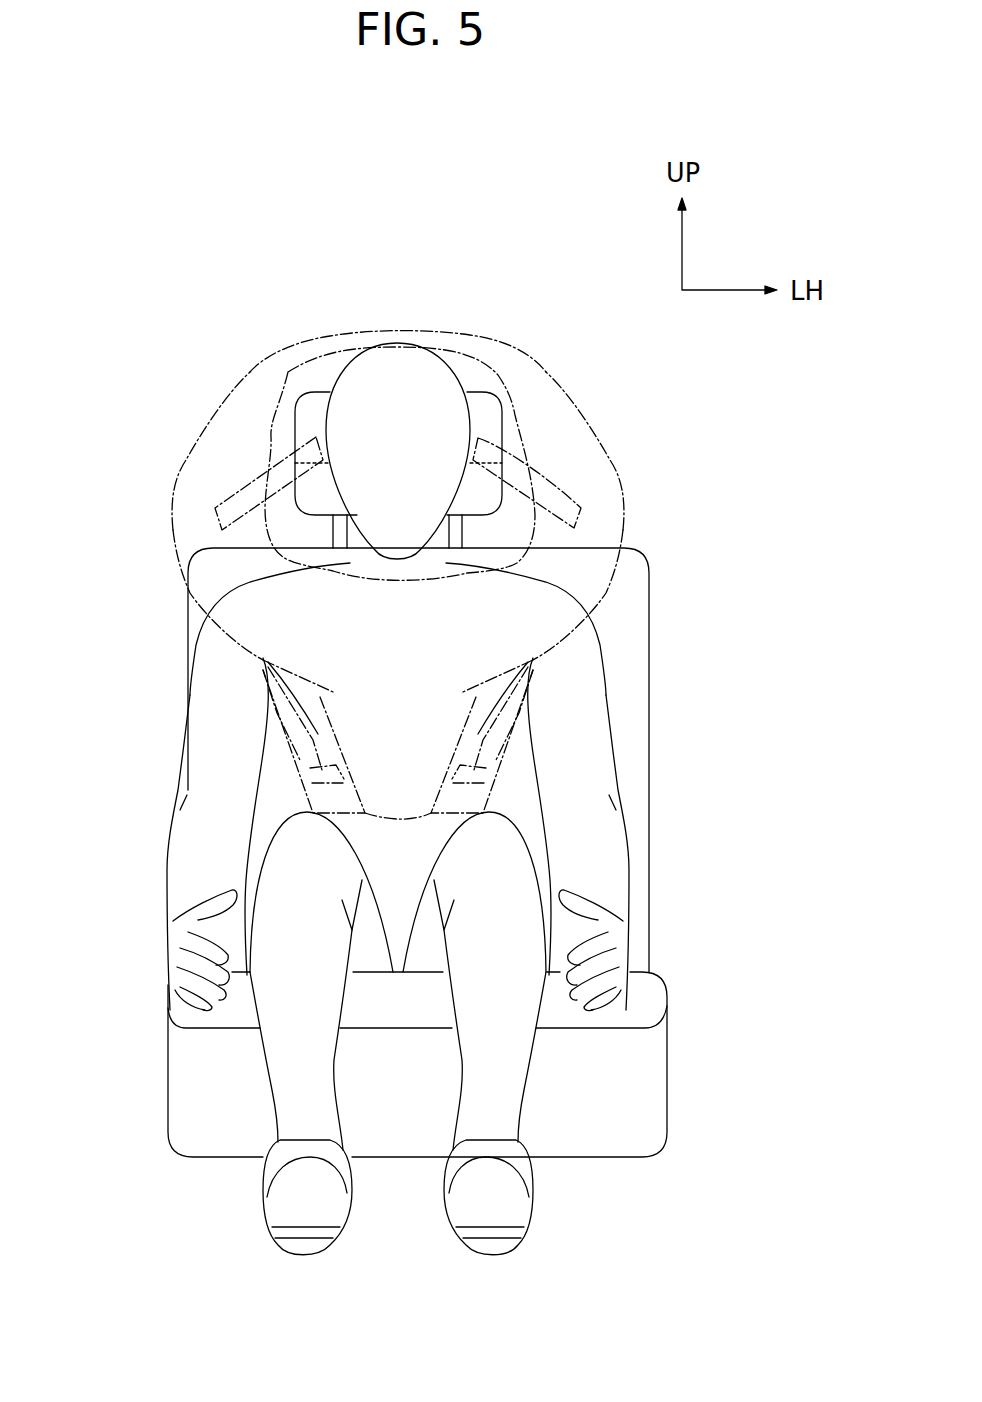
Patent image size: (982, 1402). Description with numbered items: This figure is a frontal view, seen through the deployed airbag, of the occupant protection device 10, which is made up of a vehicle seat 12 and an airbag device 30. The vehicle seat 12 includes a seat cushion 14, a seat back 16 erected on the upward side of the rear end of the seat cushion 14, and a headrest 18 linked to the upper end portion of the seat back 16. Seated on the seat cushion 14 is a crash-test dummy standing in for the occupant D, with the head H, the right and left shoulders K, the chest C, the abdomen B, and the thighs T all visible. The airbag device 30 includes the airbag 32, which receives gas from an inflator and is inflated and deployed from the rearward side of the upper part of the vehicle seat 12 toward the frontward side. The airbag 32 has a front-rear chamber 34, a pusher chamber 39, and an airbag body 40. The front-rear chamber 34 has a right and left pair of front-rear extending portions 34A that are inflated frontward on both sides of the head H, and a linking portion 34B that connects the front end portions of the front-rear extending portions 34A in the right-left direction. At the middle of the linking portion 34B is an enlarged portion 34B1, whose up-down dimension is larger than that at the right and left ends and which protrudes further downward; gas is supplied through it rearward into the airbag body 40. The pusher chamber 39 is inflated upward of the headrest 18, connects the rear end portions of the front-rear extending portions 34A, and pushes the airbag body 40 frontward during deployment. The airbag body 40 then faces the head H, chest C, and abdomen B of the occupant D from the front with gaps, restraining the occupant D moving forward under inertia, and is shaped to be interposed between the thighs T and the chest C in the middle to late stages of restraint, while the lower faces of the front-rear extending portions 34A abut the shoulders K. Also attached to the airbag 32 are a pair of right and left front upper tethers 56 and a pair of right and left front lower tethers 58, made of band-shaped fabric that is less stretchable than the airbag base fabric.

The occupant protection device 10 is at (384, 203).
The vehicle seat 12 is at (166, 1082).
The seat cushion 14 is at (668, 1068).
The seat back 16 is at (650, 652).
The headrest 18 is at (484, 422).
The airbag device 30 is at (534, 245).
The airbag 32 is at (660, 505).
The front-rear chamber 34 is at (167, 540).
The front-rear extending portions 34A is at (203, 415).
The linking portion 34B is at (503, 695).
The enlarged portion 34B1 is at (433, 800).
The pusher chamber 39 is at (473, 337).
The airbag body 40 is at (347, 333).
The front upper tethers 56 is at (240, 480).
The front lower tethers 58 is at (263, 705).
The head H is at (397, 340).
The shoulders K is at (222, 598).
The chest C is at (347, 628).
The abdomen B is at (270, 792).
The occupant D is at (163, 852).
The thighs T is at (520, 818).